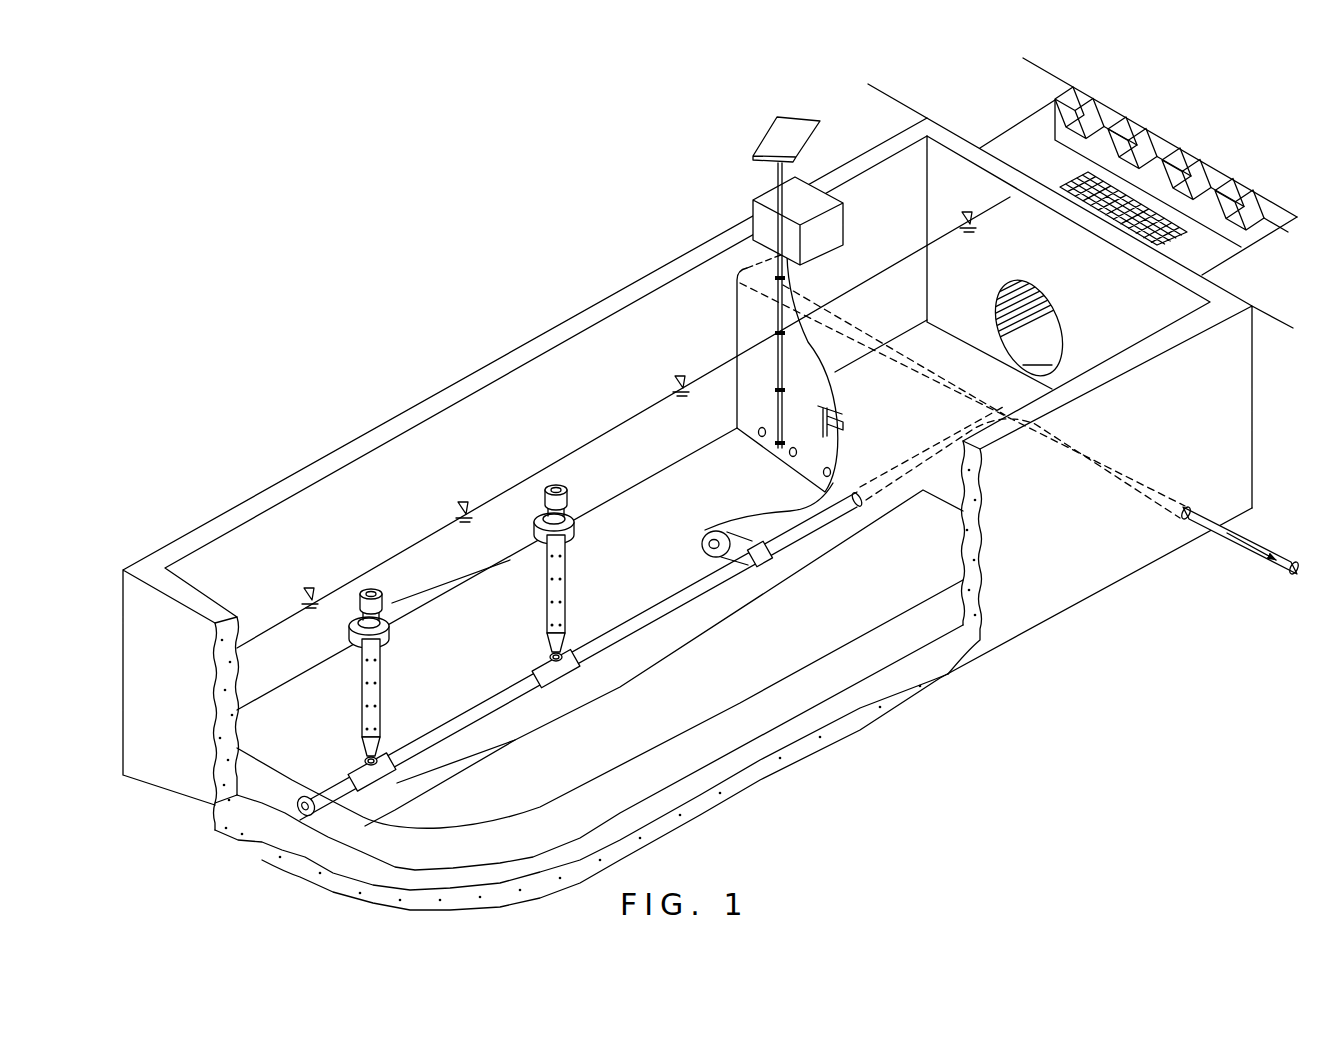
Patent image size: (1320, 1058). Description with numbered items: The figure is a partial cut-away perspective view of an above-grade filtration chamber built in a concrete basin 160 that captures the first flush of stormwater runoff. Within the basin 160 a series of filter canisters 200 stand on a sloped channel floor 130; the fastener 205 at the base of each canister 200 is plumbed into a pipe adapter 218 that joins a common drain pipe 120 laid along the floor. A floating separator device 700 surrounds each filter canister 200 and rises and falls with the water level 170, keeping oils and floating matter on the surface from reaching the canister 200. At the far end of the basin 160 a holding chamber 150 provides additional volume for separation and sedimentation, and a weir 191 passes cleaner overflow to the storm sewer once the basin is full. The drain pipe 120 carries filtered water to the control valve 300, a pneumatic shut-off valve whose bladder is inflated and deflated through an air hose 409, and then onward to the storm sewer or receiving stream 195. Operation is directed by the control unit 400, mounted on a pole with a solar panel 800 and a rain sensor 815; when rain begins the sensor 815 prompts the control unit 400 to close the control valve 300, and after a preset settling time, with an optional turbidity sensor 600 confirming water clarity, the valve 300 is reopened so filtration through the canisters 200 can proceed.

The drain pipe 120 is at (579, 655).
The channel floor 130 is at (733, 700).
The holding chamber 150 is at (1028, 317).
The concrete basin 160 is at (525, 474).
The water level 170 is at (623, 422).
The weir 191 is at (1160, 152).
The storm sewer or receiving stream 195 is at (1240, 552).
The filter canister 200 is at (419, 584).
The fastener 205 is at (418, 688).
The pipe adapter 218 is at (425, 713).
The control valve 300 is at (741, 524).
The control unit 400 is at (739, 213).
The air hose 409 is at (836, 372).
The turbidity sensor 600 is at (877, 411).
The floating separator device 700 is at (408, 590).
The solar panel 800 is at (735, 121).
The rain sensor 815 is at (712, 283).